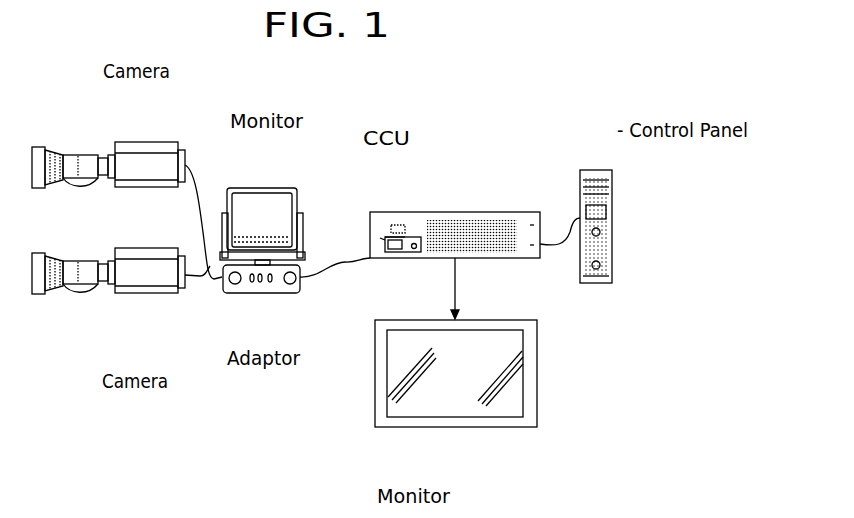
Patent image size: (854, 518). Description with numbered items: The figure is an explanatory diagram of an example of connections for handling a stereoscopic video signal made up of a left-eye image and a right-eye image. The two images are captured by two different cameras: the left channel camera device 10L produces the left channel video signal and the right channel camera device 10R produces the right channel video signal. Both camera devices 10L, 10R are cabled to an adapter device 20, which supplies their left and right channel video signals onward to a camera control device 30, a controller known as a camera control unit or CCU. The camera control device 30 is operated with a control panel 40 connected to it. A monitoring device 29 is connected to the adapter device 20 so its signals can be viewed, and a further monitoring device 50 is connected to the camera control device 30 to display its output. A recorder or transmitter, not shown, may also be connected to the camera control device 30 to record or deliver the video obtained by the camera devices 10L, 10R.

The left channel camera device 10L is at (148, 136).
The right channel camera device 10R is at (135, 294).
The adapter device 20 is at (258, 293).
The monitoring device 29 is at (268, 188).
The camera control device 30 is at (392, 212).
The control panel 40 is at (596, 168).
The monitoring device 50 is at (418, 427).